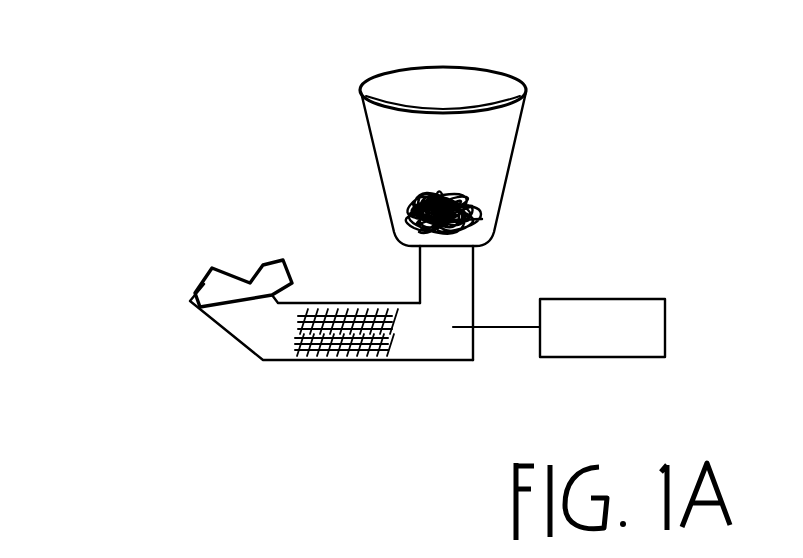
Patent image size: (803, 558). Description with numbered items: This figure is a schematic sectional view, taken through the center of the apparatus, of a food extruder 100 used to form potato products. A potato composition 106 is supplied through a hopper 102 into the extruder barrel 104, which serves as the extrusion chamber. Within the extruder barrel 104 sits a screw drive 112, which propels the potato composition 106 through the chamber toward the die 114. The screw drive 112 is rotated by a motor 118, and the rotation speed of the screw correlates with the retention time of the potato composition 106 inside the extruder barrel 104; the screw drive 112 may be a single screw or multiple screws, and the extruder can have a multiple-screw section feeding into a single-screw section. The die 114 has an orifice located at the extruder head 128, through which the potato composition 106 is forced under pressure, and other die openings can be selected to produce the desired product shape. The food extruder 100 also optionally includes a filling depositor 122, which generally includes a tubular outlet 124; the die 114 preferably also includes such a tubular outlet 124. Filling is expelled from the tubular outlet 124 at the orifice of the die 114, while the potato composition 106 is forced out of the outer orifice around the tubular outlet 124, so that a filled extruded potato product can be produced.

The food extruder 100 is at (520, 52).
The hopper 102 is at (515, 185).
The extruder barrel 104 is at (386, 367).
The potato composition 106 is at (388, 216).
The screw drive 112 is at (284, 336).
The die 114 is at (182, 296).
The motor 118 is at (680, 325).
The filling depositor 122 is at (248, 266).
The tubular outlet 124 is at (191, 300).
The extruder head 128 is at (176, 314).